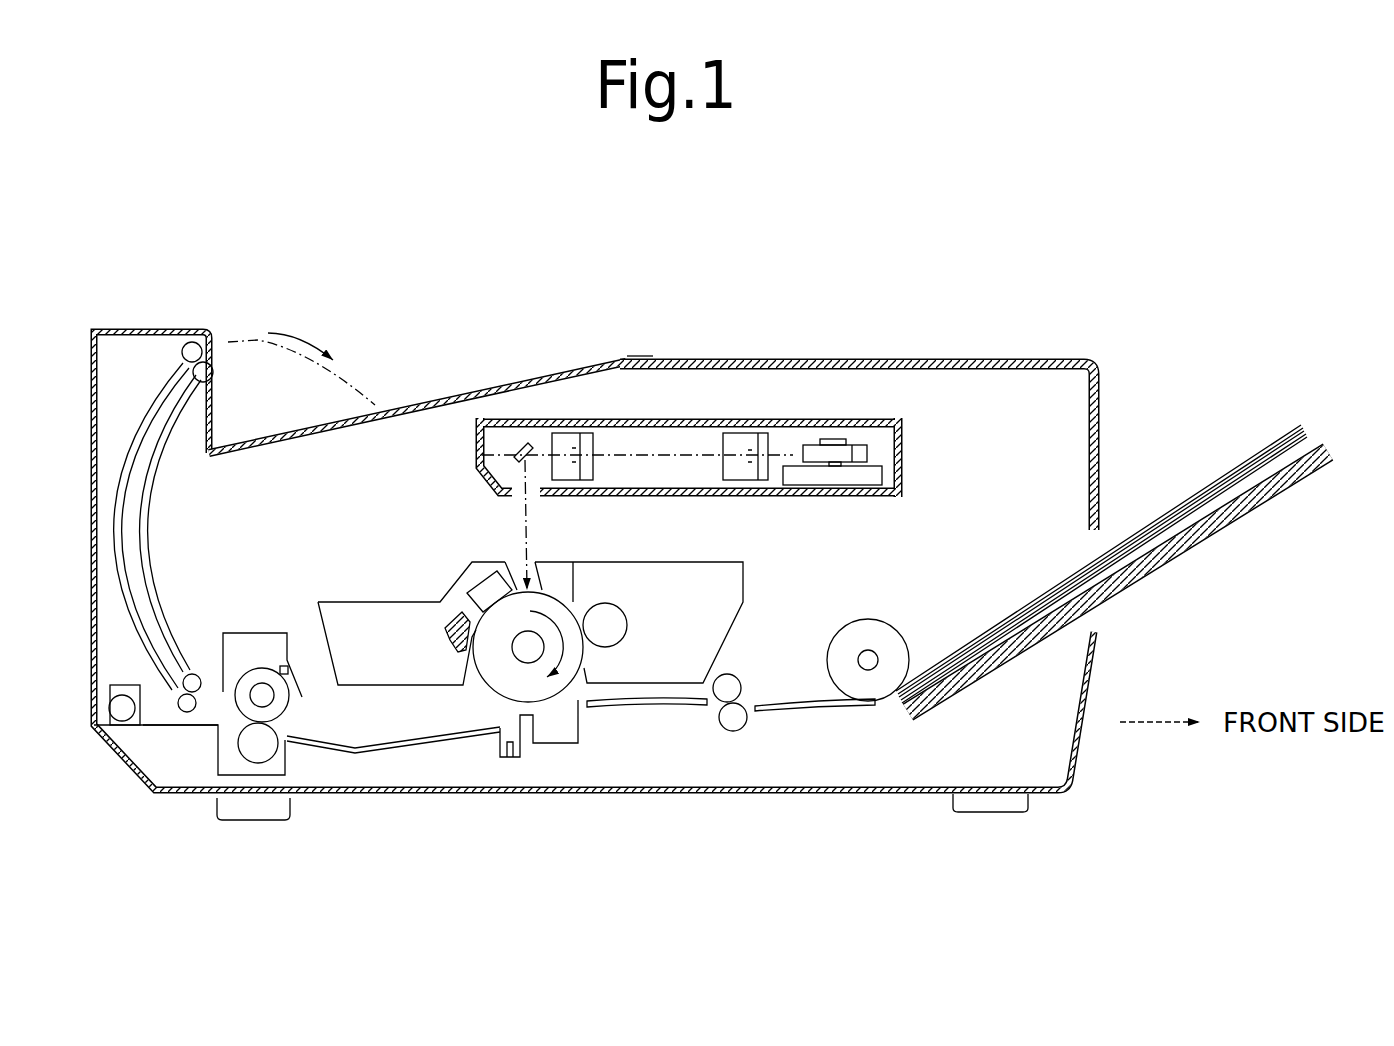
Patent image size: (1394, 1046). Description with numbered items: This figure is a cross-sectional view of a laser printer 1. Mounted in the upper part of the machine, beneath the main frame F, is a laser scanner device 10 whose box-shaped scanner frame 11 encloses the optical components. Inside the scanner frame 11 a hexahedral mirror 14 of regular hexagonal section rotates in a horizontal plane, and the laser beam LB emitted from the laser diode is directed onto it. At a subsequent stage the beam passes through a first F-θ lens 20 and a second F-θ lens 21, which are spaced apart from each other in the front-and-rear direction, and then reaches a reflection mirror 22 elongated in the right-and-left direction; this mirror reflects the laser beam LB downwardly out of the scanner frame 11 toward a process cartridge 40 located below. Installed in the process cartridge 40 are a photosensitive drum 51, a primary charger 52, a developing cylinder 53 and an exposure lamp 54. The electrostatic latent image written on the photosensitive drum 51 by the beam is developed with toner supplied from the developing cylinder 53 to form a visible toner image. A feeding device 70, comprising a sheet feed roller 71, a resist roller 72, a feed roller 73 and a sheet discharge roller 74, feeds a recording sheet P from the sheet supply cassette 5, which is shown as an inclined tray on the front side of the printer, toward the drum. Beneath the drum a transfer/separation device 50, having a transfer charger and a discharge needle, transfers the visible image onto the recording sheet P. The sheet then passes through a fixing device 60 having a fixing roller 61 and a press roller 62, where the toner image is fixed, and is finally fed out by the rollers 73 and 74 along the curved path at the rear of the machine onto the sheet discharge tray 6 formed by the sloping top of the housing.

The laser printer 1 is at (350, 265).
The sheet supply cassette 5 is at (1255, 517).
The sheet discharge tray 6 is at (377, 416).
The laser scanner device 10 is at (708, 392).
The scanner frame 11 is at (905, 455).
The hexahedral mirror 14 is at (900, 420).
The first F-θ lens 20 is at (736, 432).
The second F-θ lens 21 is at (572, 432).
The reflection mirror 22 is at (515, 452).
The process cartridge 40 is at (596, 629).
The transfer/separation device 50 is at (538, 757).
The photosensitive drum 51 is at (485, 688).
The primary charger 52 is at (450, 600).
The developing cylinder 53 is at (628, 621).
The exposure lamp 54 is at (445, 625).
The fixing device 60 is at (304, 660).
The fixing roller 61 is at (290, 705).
The press roller 62 is at (300, 755).
The feeding device 70 is at (842, 726).
The sheet feed roller 71 is at (895, 632).
The resist roller 72 is at (745, 725).
The feed roller 73 is at (186, 712).
The sheet discharge roller 74 is at (213, 372).
The recording sheet P is at (230, 343).
The main frame F is at (930, 353).
The laser beam LB is at (522, 532).